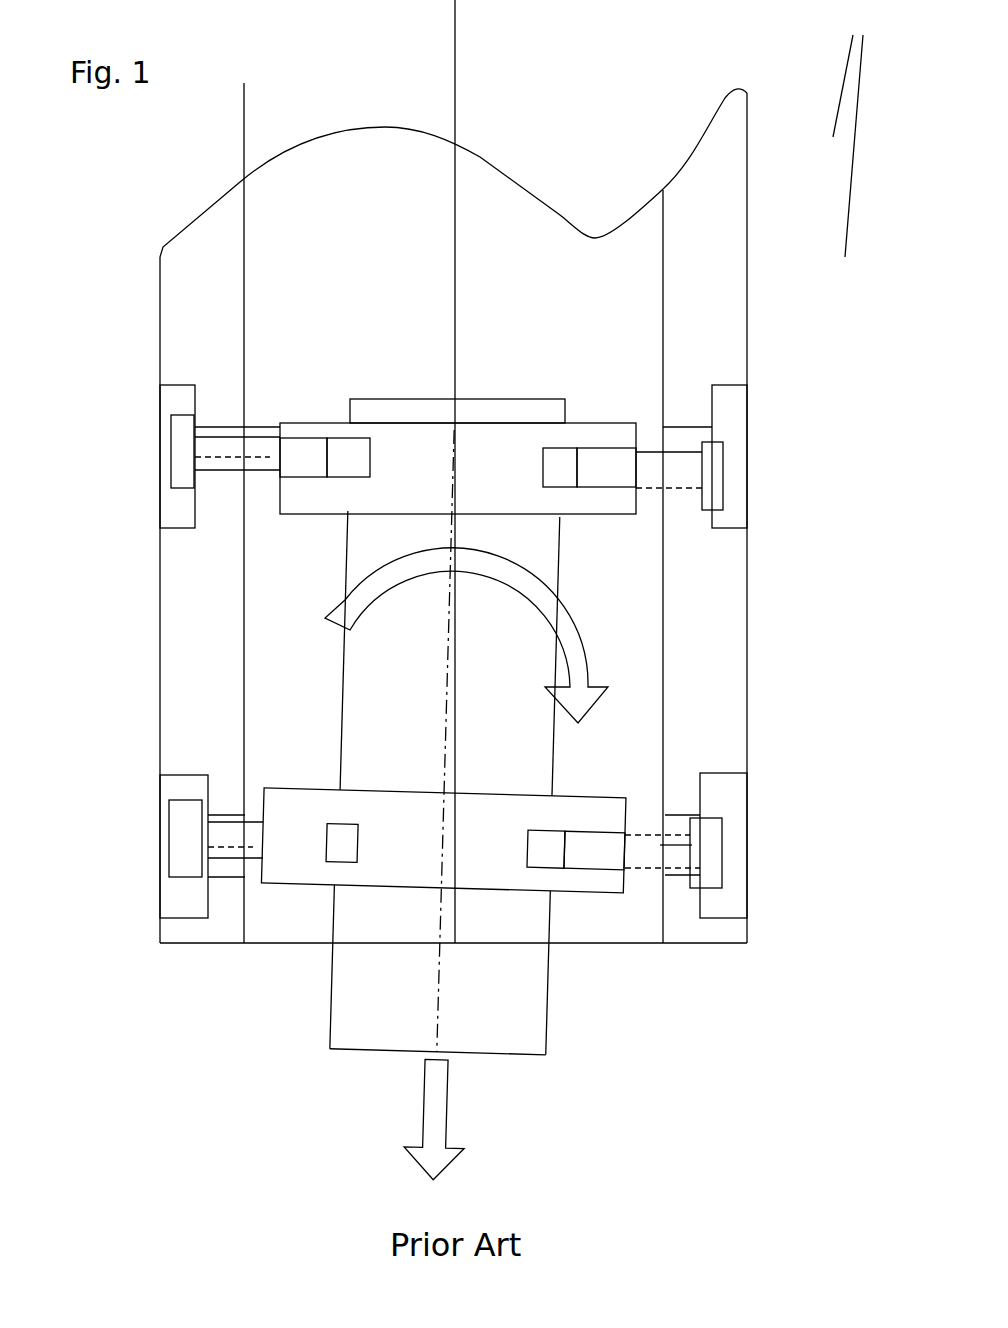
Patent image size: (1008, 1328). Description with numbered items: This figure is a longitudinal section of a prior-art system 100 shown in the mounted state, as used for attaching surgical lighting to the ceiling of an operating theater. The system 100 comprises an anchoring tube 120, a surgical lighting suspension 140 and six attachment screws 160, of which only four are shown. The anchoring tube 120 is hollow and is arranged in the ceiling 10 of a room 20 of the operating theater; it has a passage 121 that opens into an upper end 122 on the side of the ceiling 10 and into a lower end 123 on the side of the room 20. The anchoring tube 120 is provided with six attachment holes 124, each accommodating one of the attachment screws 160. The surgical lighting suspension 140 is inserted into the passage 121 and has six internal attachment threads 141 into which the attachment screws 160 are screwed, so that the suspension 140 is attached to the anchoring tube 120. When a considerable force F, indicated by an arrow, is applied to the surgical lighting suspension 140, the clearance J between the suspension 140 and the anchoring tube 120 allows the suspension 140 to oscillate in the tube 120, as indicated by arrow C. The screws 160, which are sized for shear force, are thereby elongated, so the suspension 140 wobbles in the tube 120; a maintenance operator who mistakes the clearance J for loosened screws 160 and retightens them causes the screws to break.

The ceiling 10 is at (561, 31).
The room 20 is at (822, 1124).
The system 100 is at (712, 50).
The anchoring tube 120 is at (750, 213).
The passage 121 is at (280, 947).
The upper end 122 is at (283, 153).
The lower end 123 is at (595, 917).
The attachment holes 124 is at (205, 485).
The surgical lighting suspension 140 is at (518, 400).
The internal attachment threads 141 is at (345, 481).
The attachment screws 160 is at (668, 463).
The clearance J is at (262, 432).
The oscillation arrow C is at (466, 635).
The force F is at (450, 1122).